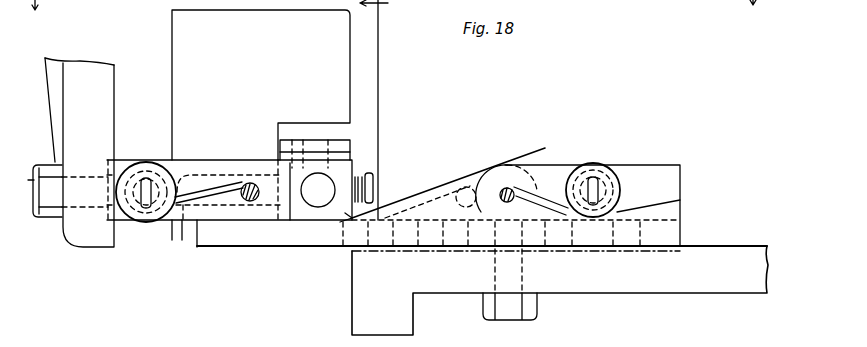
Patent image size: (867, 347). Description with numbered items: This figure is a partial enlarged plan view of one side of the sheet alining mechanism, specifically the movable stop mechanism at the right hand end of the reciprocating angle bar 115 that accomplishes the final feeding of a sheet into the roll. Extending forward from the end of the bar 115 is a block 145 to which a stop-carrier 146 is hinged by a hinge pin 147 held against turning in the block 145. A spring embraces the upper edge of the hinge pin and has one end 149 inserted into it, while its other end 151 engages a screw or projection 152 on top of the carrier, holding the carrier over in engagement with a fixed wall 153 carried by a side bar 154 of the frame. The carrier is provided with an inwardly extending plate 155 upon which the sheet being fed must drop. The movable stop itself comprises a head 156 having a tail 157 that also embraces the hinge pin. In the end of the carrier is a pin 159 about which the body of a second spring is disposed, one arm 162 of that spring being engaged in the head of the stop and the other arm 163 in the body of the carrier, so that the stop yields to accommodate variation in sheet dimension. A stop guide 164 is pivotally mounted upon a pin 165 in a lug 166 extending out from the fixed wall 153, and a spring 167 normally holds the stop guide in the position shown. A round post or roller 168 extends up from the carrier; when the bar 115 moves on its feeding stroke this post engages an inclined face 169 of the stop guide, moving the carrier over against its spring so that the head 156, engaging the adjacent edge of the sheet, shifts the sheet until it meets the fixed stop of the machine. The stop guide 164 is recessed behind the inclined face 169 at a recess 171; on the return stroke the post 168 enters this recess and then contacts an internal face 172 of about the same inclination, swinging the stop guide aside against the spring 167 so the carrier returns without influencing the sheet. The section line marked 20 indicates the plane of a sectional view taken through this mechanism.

The section line 20 is at (348, 263).
The angle bar 115 is at (95, 85).
The block 145 is at (123, 167).
The stop-carrier 146 is at (208, 168).
The hinge pin 147 is at (168, 176).
The spring end 149 is at (138, 215).
The spring end 151 is at (237, 178).
The screw 152 is at (253, 201).
The fixed wall 153 is at (427, 233).
The side bar 154 is at (672, 275).
The plate 155 is at (333, 68).
The head 156 is at (337, 145).
The tail 157 is at (167, 228).
The pin 159 is at (373, 190).
The spring arm 162 is at (360, 167).
The spring arm 163 is at (343, 213).
The stop guide 164 is at (542, 174).
The pin 165 is at (606, 180).
The lug 166 is at (557, 210).
The spring 167 is at (541, 168).
The post or roller 168 is at (340, 178).
The inclined face 169 is at (492, 170).
The recess 171 is at (506, 185).
The internal face 172 is at (448, 183).